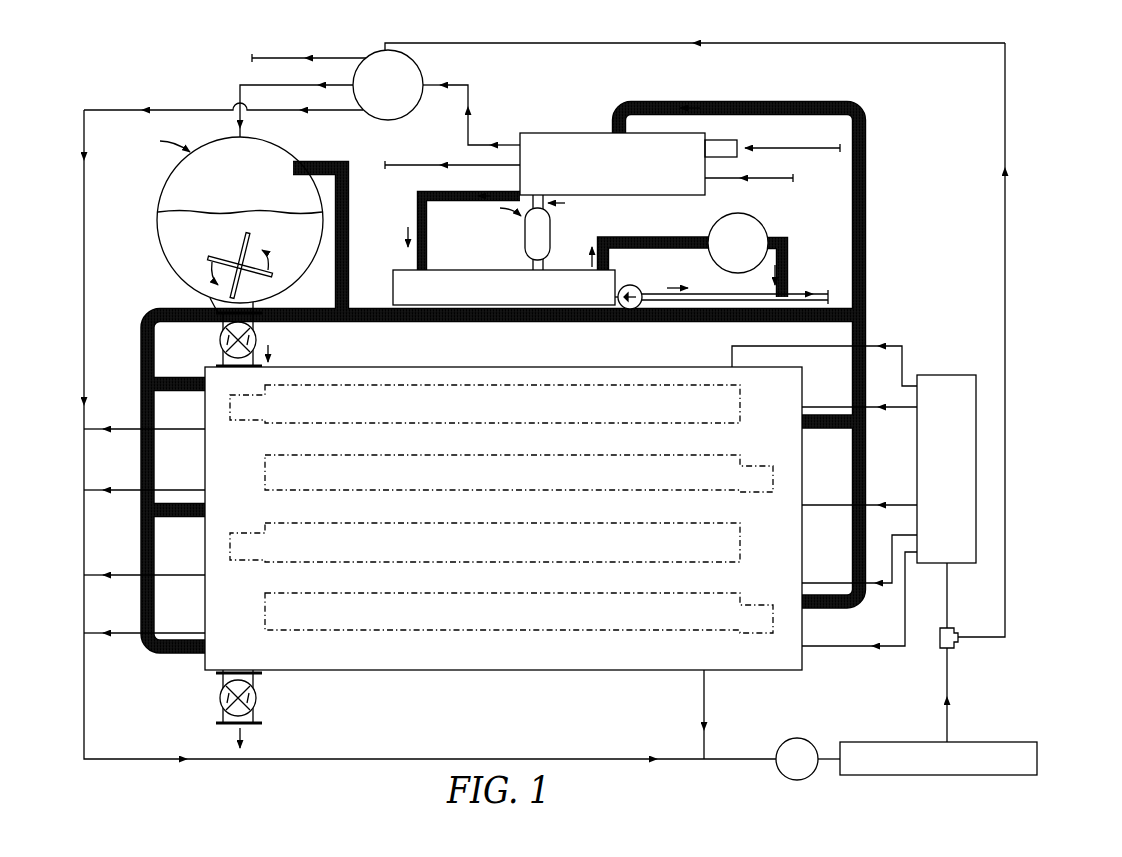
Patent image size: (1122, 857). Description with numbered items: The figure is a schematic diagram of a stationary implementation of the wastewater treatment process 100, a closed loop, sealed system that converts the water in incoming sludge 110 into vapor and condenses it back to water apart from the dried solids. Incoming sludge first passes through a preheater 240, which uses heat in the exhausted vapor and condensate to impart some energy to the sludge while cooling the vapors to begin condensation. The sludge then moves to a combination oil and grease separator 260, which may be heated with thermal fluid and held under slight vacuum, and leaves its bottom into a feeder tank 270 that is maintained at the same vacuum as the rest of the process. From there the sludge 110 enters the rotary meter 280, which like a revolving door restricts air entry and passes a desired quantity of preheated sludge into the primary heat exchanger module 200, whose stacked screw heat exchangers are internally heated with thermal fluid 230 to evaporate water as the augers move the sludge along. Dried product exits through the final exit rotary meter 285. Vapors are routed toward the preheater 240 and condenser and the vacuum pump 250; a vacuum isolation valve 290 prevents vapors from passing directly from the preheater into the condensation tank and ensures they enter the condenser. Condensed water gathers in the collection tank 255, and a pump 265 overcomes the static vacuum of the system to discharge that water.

The process 100 is at (1034, 71).
The sludge 110 is at (180, 256).
The heat exchanger module 200 is at (771, 676).
The thermal fluid 230 is at (1005, 597).
The preheater 240 is at (556, 133).
The vacuum pump 250 is at (766, 228).
The collection tank 255 is at (393, 270).
The oil and grease separator 260 is at (377, 52).
The pump 265 is at (638, 290).
The feeder tank 270 is at (165, 180).
The rotary meter 280 is at (258, 333).
The exit rotary meter 285 is at (257, 697).
The vacuum isolation valve 290 is at (518, 245).